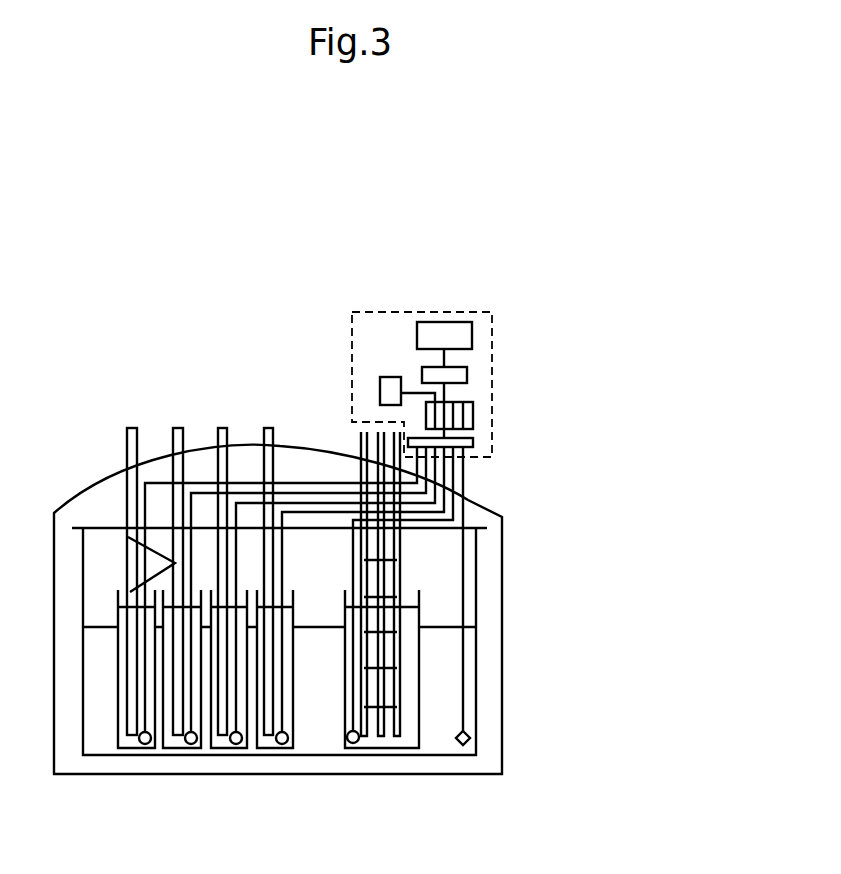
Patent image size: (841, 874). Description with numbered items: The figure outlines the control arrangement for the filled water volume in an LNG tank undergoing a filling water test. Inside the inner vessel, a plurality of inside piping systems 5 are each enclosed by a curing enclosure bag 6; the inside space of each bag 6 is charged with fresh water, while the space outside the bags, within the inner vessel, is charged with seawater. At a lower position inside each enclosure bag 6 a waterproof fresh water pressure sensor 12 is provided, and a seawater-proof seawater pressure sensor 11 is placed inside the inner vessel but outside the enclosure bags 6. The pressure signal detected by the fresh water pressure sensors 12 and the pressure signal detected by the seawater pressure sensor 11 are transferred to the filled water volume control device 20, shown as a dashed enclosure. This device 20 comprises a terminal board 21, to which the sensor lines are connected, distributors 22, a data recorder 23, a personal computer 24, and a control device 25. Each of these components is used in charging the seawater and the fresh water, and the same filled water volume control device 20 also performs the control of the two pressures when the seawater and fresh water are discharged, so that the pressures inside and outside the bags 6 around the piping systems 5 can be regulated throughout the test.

The inside piping system 5 is at (268, 428).
The curing enclosure bag 6 is at (294, 741).
The seawater pressure sensor 11 is at (463, 745).
The fresh water pressure sensor 12 is at (191, 744).
The filled water volume control device 20 is at (448, 312).
The terminal board 21 is at (473, 442).
The distributor 22 is at (473, 410).
The data recorder 23 is at (467, 375).
The personal computer 24 is at (472, 335).
The control device 25 is at (387, 377).